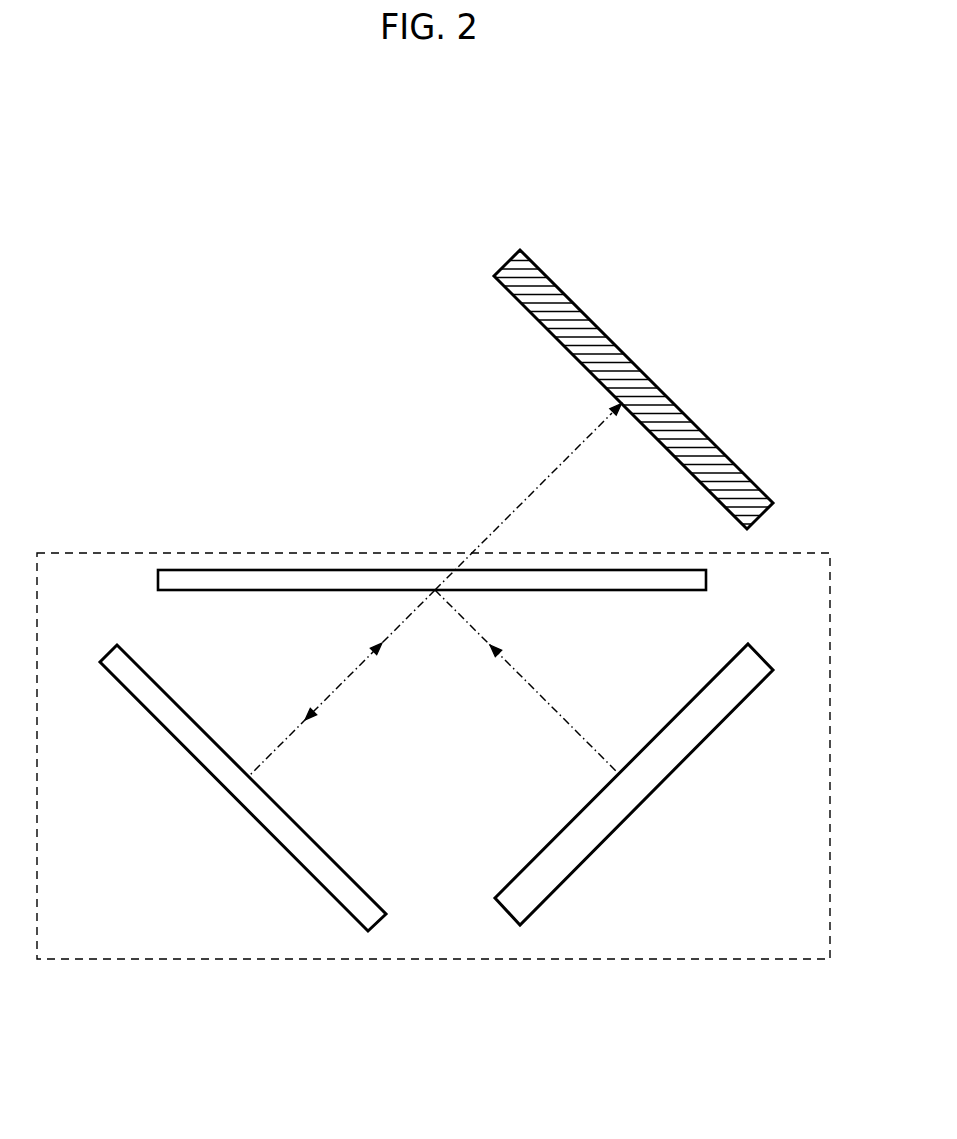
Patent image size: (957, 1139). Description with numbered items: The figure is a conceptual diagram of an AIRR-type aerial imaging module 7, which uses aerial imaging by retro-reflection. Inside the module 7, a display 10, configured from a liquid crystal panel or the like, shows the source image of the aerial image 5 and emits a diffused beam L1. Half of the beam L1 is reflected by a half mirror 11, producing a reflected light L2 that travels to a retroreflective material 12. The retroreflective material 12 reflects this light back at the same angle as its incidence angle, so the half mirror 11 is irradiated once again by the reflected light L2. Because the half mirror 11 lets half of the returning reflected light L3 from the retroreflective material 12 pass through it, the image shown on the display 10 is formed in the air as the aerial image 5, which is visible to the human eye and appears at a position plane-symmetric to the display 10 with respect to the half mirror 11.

The aerial image 5 is at (623, 352).
The aerial imaging module 7 is at (833, 733).
The display 10 is at (660, 782).
The half mirror 11 is at (620, 590).
The retroreflective material 12 is at (223, 788).
The beam L1 is at (547, 702).
The reflected light L2 is at (335, 683).
The reflected light L3 is at (335, 692).